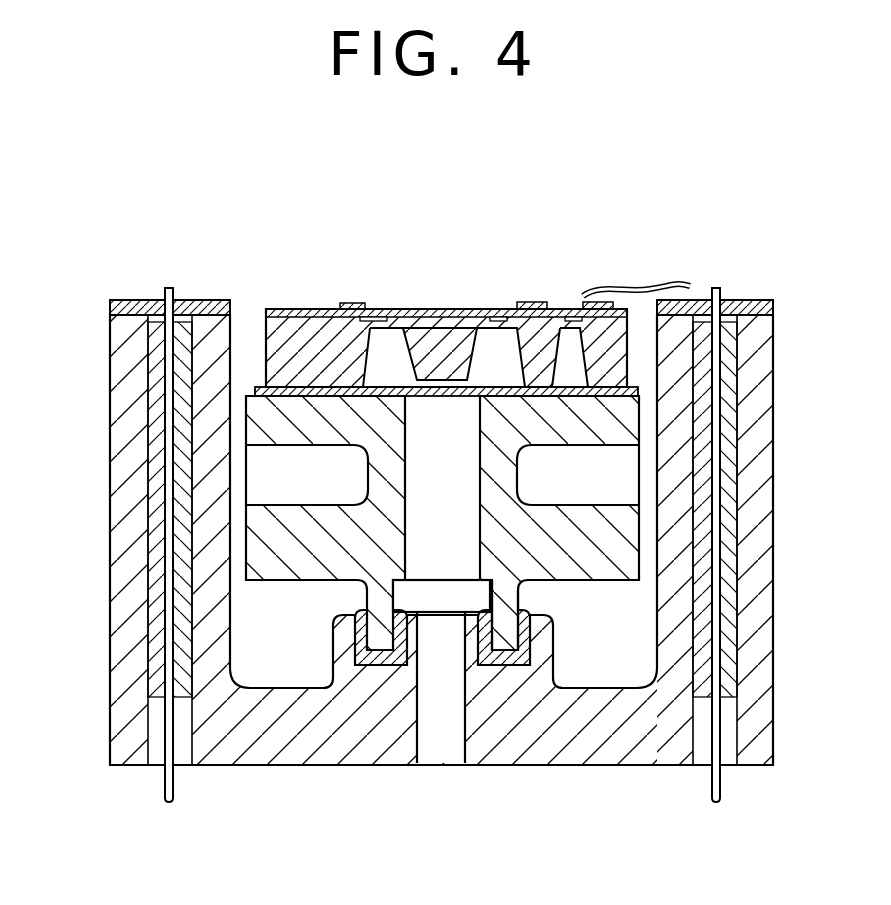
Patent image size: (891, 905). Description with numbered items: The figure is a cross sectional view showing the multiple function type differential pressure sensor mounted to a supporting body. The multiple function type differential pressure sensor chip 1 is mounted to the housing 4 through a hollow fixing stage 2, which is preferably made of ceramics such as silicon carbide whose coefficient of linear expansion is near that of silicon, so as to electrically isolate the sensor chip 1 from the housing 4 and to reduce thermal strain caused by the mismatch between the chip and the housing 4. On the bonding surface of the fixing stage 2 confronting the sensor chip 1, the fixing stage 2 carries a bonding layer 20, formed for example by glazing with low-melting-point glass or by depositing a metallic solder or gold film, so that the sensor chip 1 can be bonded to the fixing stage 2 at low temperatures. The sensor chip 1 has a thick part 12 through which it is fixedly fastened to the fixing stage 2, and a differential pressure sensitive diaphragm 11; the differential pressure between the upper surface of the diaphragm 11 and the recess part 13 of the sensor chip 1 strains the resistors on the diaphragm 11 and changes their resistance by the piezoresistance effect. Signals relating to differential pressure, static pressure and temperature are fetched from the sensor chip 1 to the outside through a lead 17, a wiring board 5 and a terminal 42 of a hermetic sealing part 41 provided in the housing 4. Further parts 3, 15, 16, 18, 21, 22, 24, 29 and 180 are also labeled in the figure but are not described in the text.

The multiple function type differential pressure sensor chip 1 is at (265, 304).
The hollow fixing stage 2 is at (293, 580).
The terminal 3 is at (512, 665).
The housing 4 is at (217, 765).
The wiring board 5 is at (133, 302).
The differential pressure sensitive diaphragm 11 is at (487, 318).
The thick part 12 is at (284, 308).
The recess part 13 is at (502, 357).
The cavity 15 is at (565, 350).
The bonding wire 16 is at (672, 288).
The lead 17 is at (716, 290).
The electrode pad 18 is at (350, 303).
The bonding layer 20 is at (640, 390).
The support web 21 is at (640, 430).
The lower support block 22 is at (500, 475).
The plate 24 is at (513, 597).
The pressure passage 29 is at (463, 540).
The hermetic sealing part 41 is at (147, 458).
The terminal 42 is at (163, 598).
The bonding layer 180 is at (575, 358).